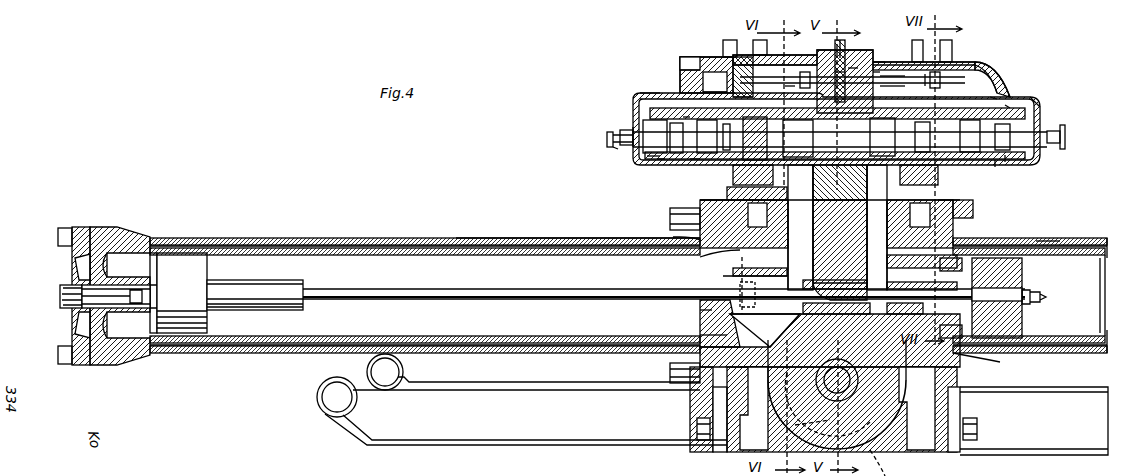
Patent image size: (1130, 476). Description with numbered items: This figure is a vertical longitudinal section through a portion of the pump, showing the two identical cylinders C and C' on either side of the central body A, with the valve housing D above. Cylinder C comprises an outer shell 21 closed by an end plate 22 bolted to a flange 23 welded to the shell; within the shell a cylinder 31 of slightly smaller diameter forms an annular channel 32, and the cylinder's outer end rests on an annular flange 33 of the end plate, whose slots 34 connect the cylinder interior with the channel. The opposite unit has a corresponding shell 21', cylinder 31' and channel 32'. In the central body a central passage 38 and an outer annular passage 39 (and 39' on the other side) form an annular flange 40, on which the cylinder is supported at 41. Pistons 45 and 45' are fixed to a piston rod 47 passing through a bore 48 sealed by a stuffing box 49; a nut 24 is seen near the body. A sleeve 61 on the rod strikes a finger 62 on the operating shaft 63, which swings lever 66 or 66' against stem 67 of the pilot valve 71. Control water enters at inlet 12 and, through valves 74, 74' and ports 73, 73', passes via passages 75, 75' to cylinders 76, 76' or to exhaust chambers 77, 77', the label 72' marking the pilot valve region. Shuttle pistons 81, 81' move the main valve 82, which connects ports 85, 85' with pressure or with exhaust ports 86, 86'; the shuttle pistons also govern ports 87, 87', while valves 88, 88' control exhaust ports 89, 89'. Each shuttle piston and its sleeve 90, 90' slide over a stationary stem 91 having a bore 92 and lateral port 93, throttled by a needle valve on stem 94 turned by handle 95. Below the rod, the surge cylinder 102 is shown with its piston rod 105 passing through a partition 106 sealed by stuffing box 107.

The control water inlet 12 is at (847, 58).
The outer shell 21 is at (425, 279).
The outer shell 21' is at (1030, 281).
The end plate 22 is at (80, 227).
The flange 23 is at (103, 227).
The nut 24 is at (673, 237).
The cylinder 31 is at (425, 277).
The cylinder 31' is at (1029, 295).
The annular channel 32 is at (425, 280).
The annular channel 32' is at (1034, 285).
The annular flange 33 is at (153, 256).
The slots 34 is at (130, 252).
The central passage 38 is at (725, 313).
The annular passage 39 is at (710, 263).
The annular passage 39' is at (997, 365).
The annular flange 40 is at (735, 277).
The support 41 is at (723, 335).
The piston 45 is at (147, 270).
The piston 45' is at (1006, 298).
The piston rod 47 is at (440, 297).
The bore 48 is at (765, 330).
The stuffing box 49 is at (830, 281).
The sleeve 61 is at (247, 283).
The finger 62 is at (745, 296).
The operating shaft 63 is at (735, 200).
The lever 66 is at (735, 60).
The lever 66' is at (951, 83).
The stem 67 is at (770, 78).
The pilot valve 71 is at (889, 92).
The gear 72' is at (866, 57).
The port 73 is at (826, 56).
The port 73' is at (891, 59).
The valve 74 is at (796, 66).
The valve 74' is at (888, 76).
The passage 75 is at (651, 81).
The passage 75' is at (1056, 82).
The cylinder 76 is at (620, 120).
The cylinder 76' is at (1061, 128).
The exhaust chamber 77 is at (695, 50).
The exhaust chamber 77' is at (892, 46).
The shuttle piston 81 is at (840, 152).
The shuttle piston 81' is at (1021, 171).
The valve 82 is at (837, 227).
The port 85 is at (799, 245).
The port 85' is at (880, 245).
The exhaust port 86 is at (753, 176).
The exhaust port 86' is at (919, 176).
The port 87 is at (694, 173).
The port 87' is at (1028, 91).
The valve 88 is at (713, 186).
The valve 88' is at (958, 187).
The exhaust port 89 is at (715, 96).
The exhaust port 89' is at (1006, 86).
The sleeve 90 is at (675, 97).
The sleeve 90' is at (996, 176).
The stem 91 is at (647, 156).
The bore 92 is at (657, 160).
The lateral port 93 is at (628, 130).
The valve stem 94 is at (614, 147).
The handle 95 is at (607, 136).
The surge cylinder 102 is at (795, 425).
The piston rod 105 is at (858, 383).
The partition 106 is at (872, 452).
The stuffing box 107 is at (860, 400).
The central body A is at (968, 208).
The cylinder C is at (574, 223).
The cylinder C' is at (1044, 229).
The valve housing D is at (1050, 108).